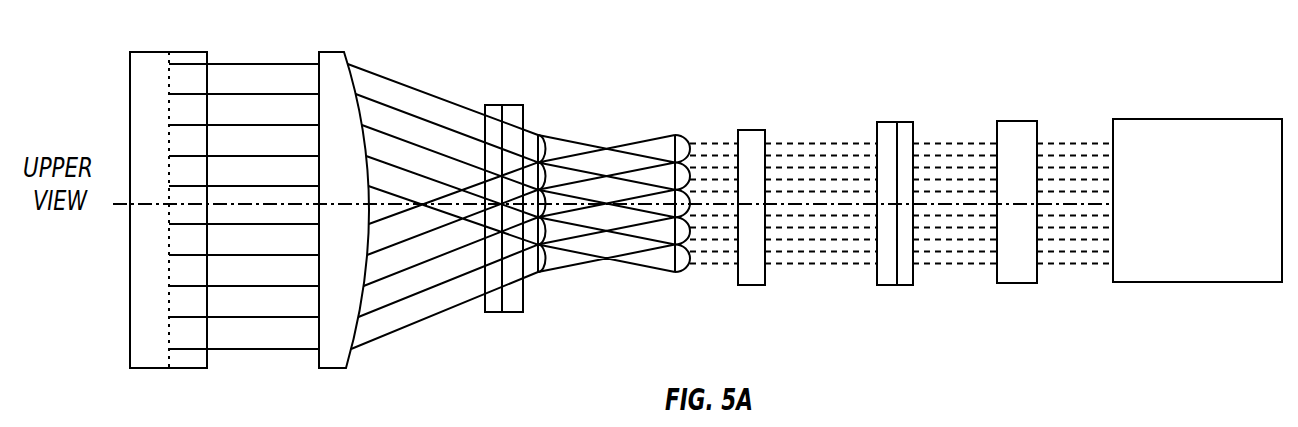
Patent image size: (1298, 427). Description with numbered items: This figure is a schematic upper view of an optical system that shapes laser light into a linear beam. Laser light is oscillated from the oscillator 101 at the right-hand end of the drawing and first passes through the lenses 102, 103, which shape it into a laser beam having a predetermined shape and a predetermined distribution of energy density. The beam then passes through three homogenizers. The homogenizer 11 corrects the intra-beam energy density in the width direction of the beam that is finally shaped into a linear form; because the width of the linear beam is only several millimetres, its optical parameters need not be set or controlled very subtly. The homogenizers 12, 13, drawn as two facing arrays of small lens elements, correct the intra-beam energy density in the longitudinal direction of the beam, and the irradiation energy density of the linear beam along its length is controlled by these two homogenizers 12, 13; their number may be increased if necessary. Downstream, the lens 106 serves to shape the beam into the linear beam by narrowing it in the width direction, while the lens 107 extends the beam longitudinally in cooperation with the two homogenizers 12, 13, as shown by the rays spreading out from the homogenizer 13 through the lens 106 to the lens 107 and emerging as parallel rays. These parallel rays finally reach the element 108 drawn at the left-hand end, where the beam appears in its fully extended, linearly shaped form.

The oscillator 101 is at (1276, 273).
The lens 102 is at (1012, 128).
The lens 103 is at (887, 128).
The homogenizer 11 is at (760, 131).
The homogenizer 12 is at (673, 135).
The homogenizer 13 is at (548, 136).
The lens 106 is at (487, 115).
The lens 107 is at (344, 52).
The irradiated surface / substrate 108 is at (183, 103).